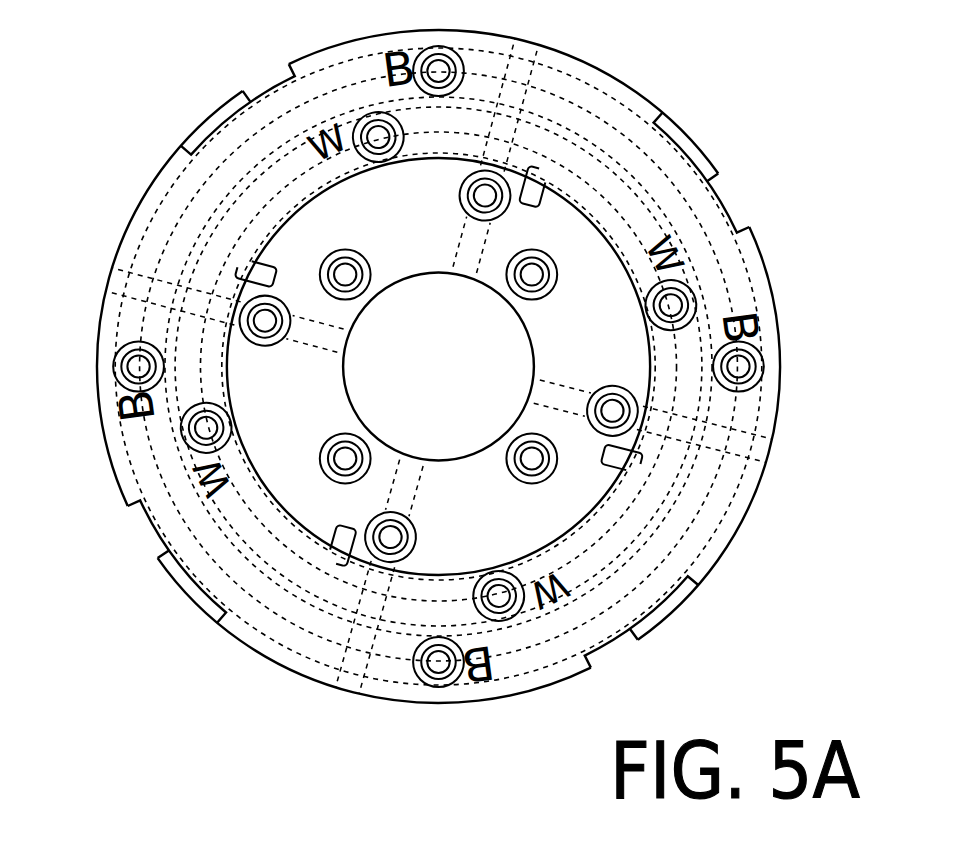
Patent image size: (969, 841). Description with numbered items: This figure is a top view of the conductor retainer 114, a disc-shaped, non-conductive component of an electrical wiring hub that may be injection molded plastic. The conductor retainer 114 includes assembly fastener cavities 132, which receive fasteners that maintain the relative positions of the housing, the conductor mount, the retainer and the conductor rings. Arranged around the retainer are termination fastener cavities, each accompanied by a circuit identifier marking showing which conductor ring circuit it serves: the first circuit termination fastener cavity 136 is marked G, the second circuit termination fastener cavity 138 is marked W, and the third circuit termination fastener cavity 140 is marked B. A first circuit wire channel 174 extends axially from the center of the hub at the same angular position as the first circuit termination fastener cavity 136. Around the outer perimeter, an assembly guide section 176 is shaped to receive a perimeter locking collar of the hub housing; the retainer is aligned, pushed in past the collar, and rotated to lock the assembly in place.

The conductor retainer 114 is at (353, 42).
The assembly fastener cavity 132 is at (537, 277).
The first circuit termination fastener cavity 136 is at (390, 539).
The second circuit termination fastener cavity 138 is at (207, 428).
The third circuit termination fastener cavity 140 is at (137, 367).
The first circuit wire channel 174 is at (563, 400).
The assembly guide section 176 is at (716, 207).